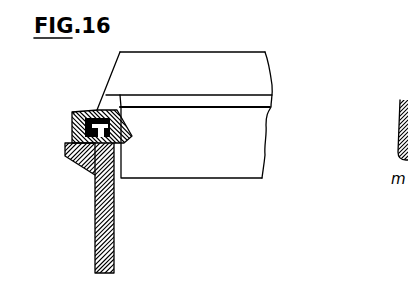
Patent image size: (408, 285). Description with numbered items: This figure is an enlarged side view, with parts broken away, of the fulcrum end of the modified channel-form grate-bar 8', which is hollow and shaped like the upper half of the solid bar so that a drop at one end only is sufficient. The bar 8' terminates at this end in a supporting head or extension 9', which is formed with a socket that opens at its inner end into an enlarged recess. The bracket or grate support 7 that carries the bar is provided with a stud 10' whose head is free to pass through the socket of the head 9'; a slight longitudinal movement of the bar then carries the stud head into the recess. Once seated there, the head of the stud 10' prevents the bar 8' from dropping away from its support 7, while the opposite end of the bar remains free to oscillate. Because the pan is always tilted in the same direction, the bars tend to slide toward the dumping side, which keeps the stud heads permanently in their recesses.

The bracket or grate support 7 is at (114, 246).
The channel grate-bar 8' is at (197, 115).
The supporting head or extension 9' is at (58, 96).
The stud 10' is at (61, 167).